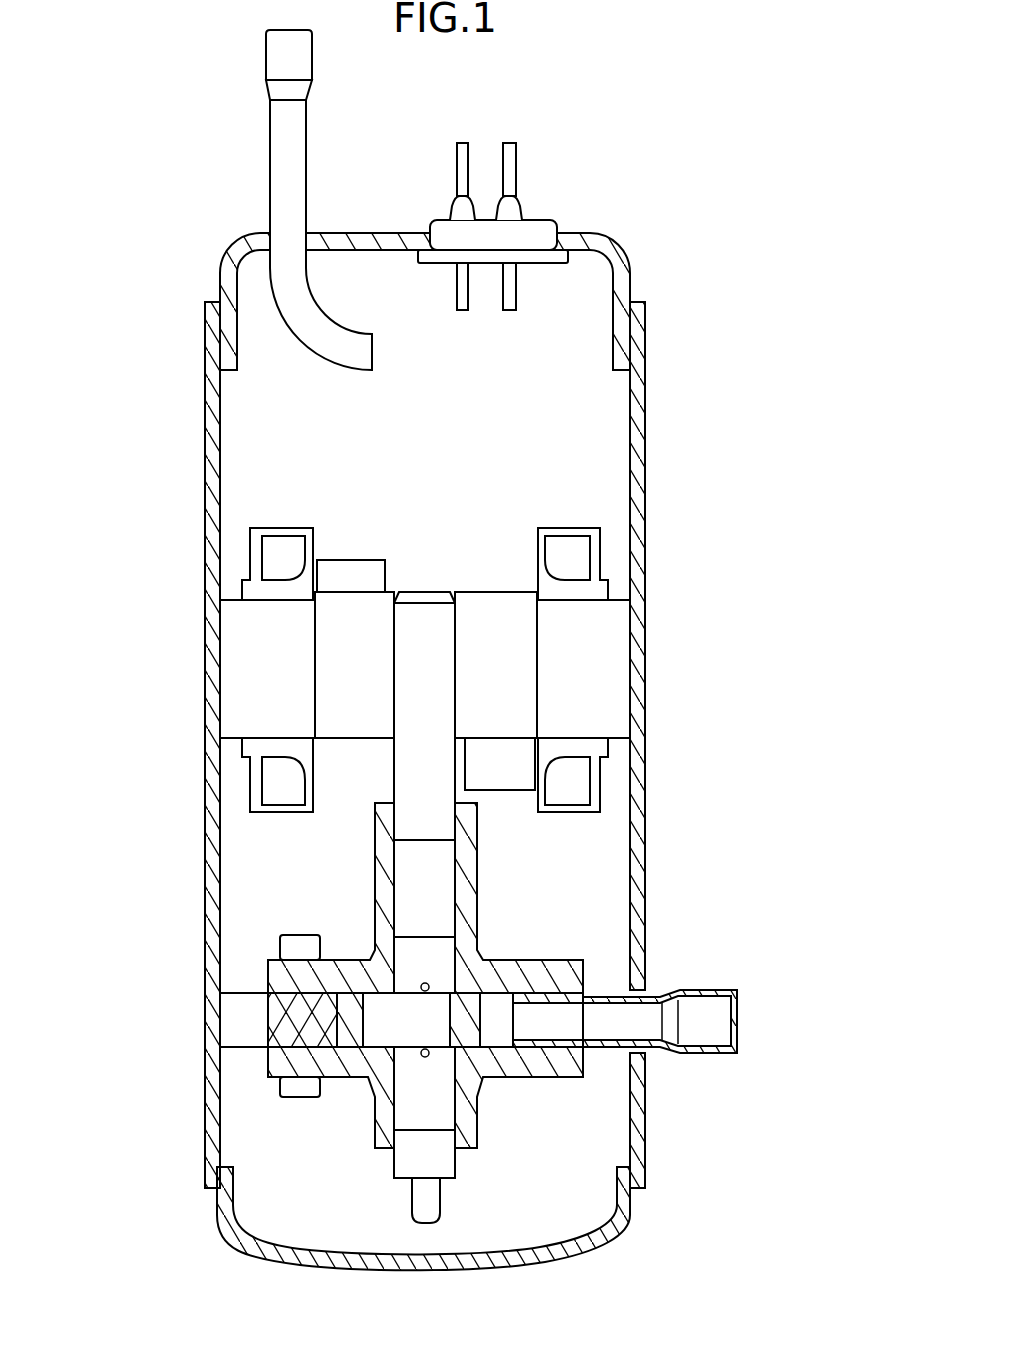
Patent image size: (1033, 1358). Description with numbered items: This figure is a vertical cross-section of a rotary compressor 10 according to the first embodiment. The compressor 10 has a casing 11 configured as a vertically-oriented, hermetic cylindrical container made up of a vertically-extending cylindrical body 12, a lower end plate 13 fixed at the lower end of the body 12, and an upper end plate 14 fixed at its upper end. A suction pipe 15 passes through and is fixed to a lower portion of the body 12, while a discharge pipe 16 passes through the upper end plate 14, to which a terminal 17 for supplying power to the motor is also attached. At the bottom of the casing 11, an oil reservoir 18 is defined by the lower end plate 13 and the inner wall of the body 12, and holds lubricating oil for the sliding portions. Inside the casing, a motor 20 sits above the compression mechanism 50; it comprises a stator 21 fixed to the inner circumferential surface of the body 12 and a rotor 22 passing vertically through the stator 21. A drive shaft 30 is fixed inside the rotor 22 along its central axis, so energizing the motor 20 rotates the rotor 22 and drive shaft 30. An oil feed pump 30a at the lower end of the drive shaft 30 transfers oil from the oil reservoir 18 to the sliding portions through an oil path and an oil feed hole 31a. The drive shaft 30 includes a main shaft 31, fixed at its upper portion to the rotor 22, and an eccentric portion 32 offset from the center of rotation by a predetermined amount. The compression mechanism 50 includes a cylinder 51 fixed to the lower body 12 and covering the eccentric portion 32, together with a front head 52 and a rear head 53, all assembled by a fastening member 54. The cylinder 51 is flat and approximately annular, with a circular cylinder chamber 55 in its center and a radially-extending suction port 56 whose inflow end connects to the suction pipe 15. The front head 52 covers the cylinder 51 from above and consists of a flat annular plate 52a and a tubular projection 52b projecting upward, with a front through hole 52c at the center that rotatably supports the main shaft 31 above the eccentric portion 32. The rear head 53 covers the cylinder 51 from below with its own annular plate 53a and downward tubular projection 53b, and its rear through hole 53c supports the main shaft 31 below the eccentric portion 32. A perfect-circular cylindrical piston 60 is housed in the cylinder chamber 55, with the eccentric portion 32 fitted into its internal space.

The compressor 10 is at (724, 170).
The casing 11 is at (647, 398).
The body 12 is at (207, 505).
The lower end plate 13 is at (612, 1237).
The upper end plate 14 is at (362, 240).
The suction pipe 15 is at (724, 1055).
The discharge pipe 16 is at (269, 153).
The terminal 17 is at (545, 222).
The oil reservoir 18 is at (533, 1238).
The motor 20 is at (611, 590).
The stator 21 is at (627, 636).
The rotor 22 is at (527, 678).
The drive shaft 30 is at (437, 592).
The oil feed pump 30a is at (435, 1205).
The main shaft 31 is at (394, 758).
The oil feed hole 31a is at (429, 985).
The eccentric portion 32 is at (345, 1040).
The compression mechanism 50 is at (527, 903).
The cylinder 51 is at (285, 1000).
The front head 52 is at (587, 975).
The annular plate 52a is at (270, 975).
The tubular projection 52b is at (378, 873).
The front through hole 52c is at (462, 823).
The rear head 53 is at (268, 1062).
The annular plate 53a is at (345, 1080).
The tubular projection 53b is at (458, 1128).
The rear through hole 53c is at (448, 1108).
The fastening member 54 is at (283, 948).
The cylinder chamber 55 is at (492, 1034).
The suction port 56 is at (592, 1050).
The piston 60 is at (325, 1012).